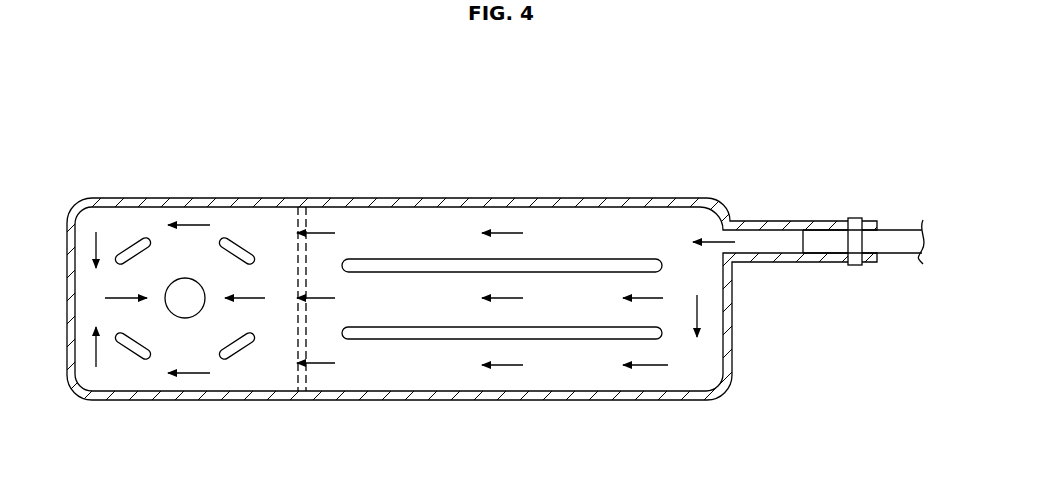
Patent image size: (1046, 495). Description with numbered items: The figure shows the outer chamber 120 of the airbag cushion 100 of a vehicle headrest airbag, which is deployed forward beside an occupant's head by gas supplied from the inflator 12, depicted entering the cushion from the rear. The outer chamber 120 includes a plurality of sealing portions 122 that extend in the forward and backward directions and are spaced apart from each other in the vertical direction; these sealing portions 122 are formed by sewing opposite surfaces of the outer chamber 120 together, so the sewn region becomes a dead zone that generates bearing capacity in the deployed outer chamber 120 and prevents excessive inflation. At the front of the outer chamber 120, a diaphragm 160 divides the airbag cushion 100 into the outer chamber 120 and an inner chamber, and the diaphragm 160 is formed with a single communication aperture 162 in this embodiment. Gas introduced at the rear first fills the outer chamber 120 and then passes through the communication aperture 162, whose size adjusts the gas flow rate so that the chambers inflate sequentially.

The airbag cushion 100 is at (457, 178).
The outer chamber 120 is at (570, 233).
The sealing portion 122 is at (235, 350).
The diaphragm 160 is at (243, 228).
The communication aperture 162 is at (178, 310).
The inflator 12 is at (897, 237).